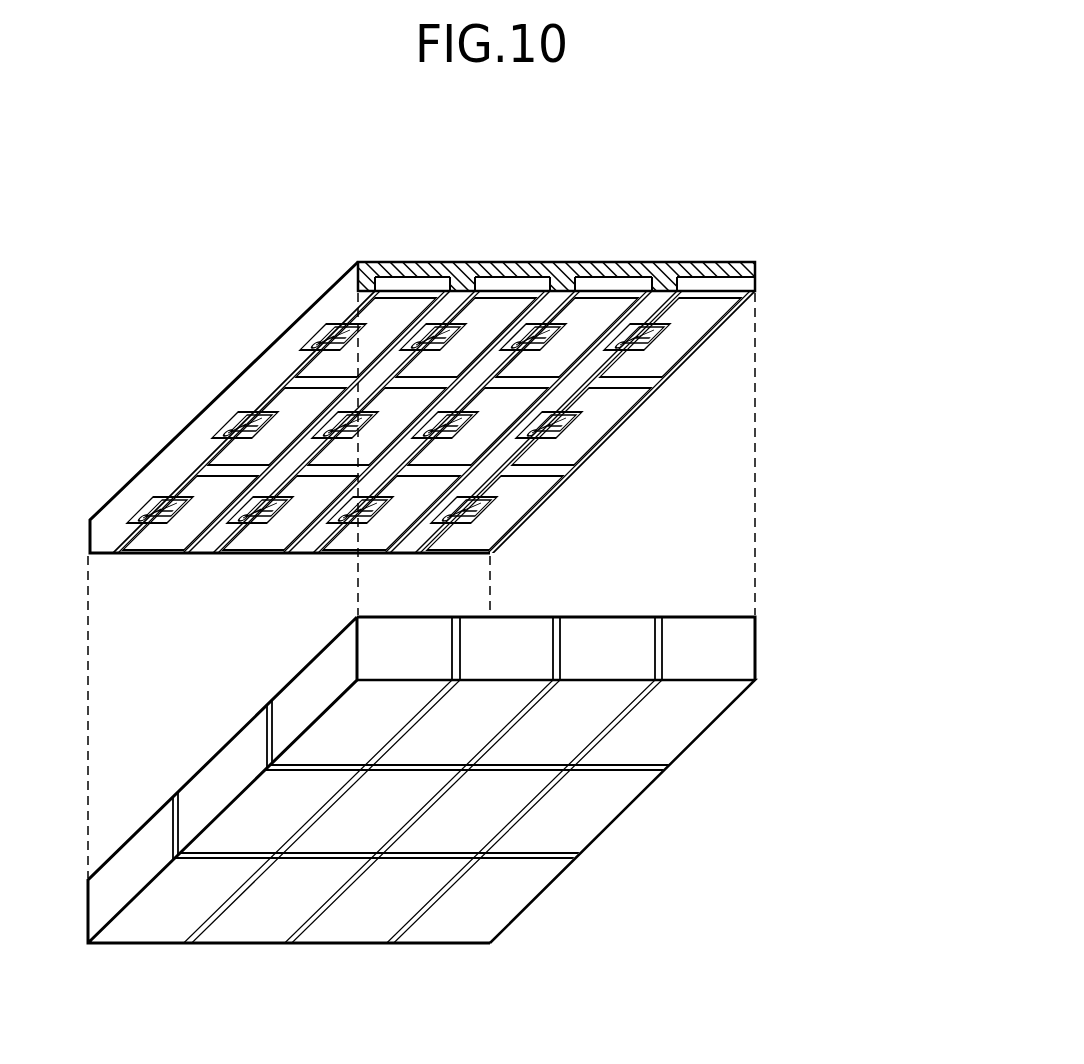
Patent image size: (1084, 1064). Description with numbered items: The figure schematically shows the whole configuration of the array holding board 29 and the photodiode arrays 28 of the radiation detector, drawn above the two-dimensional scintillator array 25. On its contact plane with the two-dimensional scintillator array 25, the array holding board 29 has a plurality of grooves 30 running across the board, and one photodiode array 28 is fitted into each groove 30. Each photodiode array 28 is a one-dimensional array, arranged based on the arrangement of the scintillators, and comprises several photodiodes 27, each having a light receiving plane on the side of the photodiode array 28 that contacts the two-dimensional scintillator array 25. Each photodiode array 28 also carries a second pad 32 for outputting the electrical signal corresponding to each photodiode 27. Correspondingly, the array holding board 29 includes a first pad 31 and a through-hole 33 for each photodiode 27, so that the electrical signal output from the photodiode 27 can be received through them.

The two-dimensional scintillator array 25 is at (714, 781).
The photodiode 27 is at (705, 320).
The photodiode array 28 is at (742, 286).
The array holding board 29 is at (621, 272).
The groove 30 is at (403, 283).
The first pad 31 is at (663, 322).
The second pad 32 is at (650, 347).
The through-hole 33 is at (620, 347).